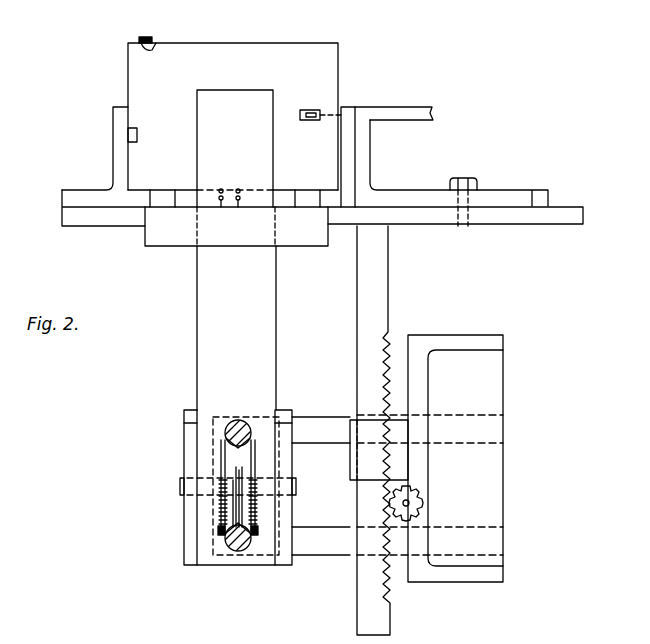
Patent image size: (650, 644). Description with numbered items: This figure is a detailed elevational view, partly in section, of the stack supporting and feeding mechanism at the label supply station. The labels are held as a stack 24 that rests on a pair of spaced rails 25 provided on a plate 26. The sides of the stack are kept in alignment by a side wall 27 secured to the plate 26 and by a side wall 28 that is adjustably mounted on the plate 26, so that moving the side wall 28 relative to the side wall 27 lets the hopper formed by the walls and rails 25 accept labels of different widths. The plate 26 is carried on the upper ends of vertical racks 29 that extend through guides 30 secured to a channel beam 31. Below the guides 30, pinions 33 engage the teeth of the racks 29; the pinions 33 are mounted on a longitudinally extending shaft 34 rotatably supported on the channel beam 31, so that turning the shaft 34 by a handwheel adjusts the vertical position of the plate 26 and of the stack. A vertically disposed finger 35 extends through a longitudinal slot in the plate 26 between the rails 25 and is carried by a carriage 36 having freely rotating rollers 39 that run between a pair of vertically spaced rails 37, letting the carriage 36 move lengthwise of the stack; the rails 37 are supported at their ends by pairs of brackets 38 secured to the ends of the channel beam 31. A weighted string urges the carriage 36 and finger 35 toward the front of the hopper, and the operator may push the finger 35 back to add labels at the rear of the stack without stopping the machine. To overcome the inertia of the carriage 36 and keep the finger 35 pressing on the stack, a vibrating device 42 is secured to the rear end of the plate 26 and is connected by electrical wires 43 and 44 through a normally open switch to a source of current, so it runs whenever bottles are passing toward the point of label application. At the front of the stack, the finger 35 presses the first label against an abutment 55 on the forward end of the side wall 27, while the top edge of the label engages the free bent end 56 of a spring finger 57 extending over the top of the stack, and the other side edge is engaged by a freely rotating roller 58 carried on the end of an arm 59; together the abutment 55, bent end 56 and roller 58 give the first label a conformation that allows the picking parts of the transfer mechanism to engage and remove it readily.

The stack 24 is at (305, 43).
The rails 25 is at (167, 200).
The plate 26 is at (565, 218).
The side wall 27 is at (118, 150).
The side wall 28 is at (372, 146).
The vertical racks 29 is at (385, 283).
The guides 30 is at (352, 458).
The channel beam 31 is at (456, 346).
The pinions 33 is at (416, 496).
The shaft 34 is at (410, 506).
The finger 35 is at (275, 150).
The carriage 36 is at (184, 437).
The rails 37 is at (238, 421).
The brackets 38 is at (312, 416).
The rollers 39 is at (220, 505).
The vibrating device 42 is at (283, 237).
The electrical wire 43 is at (222, 188).
The electrical wire 44 is at (240, 188).
The abutment 55 is at (138, 133).
The bent end 56 is at (158, 47).
The spring finger 57 is at (140, 37).
The roller 58 is at (309, 110).
The arm 59 is at (396, 112).